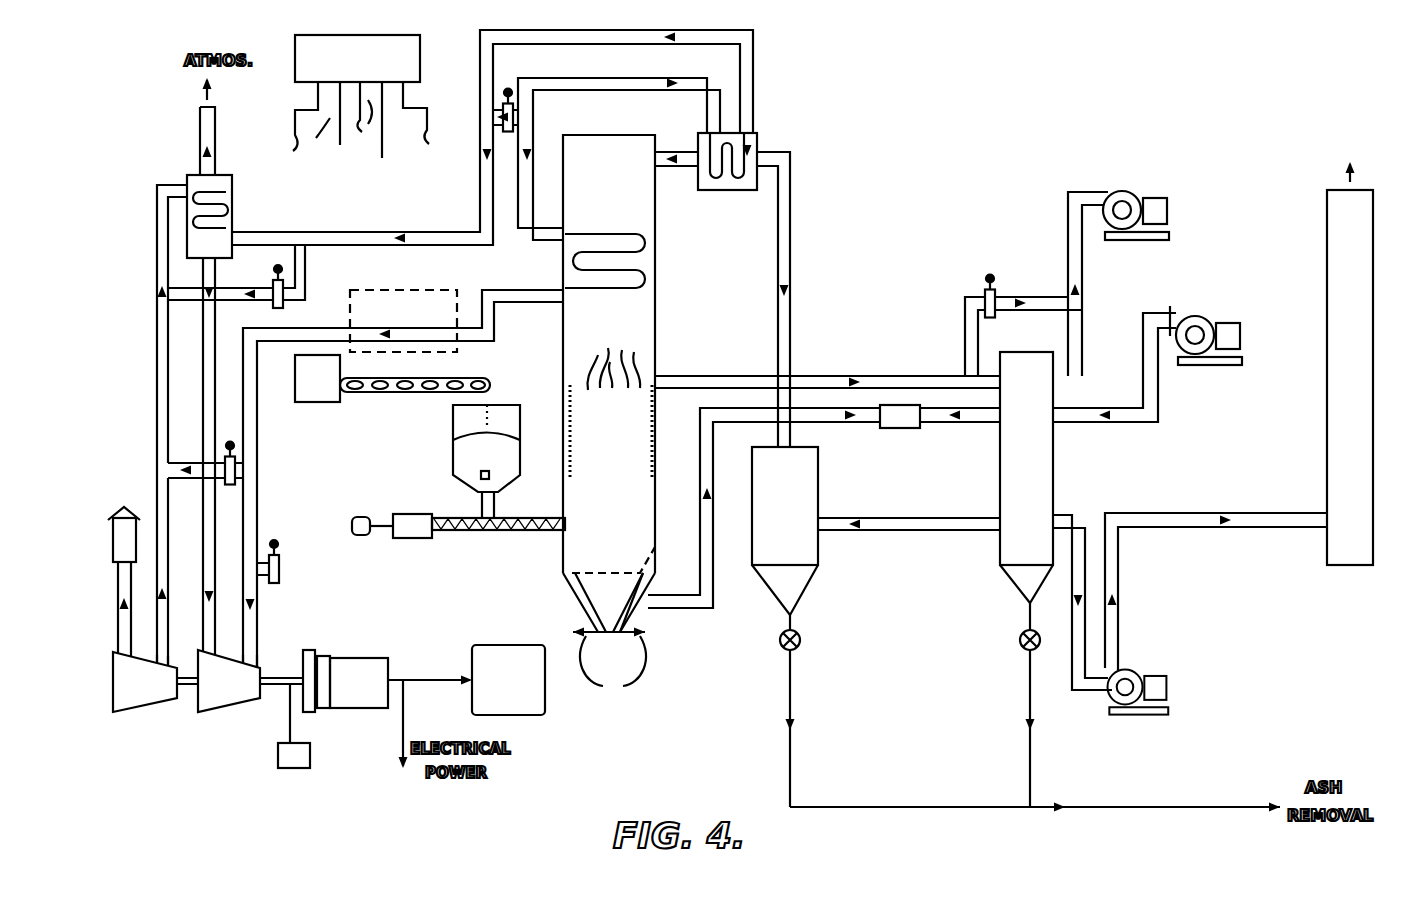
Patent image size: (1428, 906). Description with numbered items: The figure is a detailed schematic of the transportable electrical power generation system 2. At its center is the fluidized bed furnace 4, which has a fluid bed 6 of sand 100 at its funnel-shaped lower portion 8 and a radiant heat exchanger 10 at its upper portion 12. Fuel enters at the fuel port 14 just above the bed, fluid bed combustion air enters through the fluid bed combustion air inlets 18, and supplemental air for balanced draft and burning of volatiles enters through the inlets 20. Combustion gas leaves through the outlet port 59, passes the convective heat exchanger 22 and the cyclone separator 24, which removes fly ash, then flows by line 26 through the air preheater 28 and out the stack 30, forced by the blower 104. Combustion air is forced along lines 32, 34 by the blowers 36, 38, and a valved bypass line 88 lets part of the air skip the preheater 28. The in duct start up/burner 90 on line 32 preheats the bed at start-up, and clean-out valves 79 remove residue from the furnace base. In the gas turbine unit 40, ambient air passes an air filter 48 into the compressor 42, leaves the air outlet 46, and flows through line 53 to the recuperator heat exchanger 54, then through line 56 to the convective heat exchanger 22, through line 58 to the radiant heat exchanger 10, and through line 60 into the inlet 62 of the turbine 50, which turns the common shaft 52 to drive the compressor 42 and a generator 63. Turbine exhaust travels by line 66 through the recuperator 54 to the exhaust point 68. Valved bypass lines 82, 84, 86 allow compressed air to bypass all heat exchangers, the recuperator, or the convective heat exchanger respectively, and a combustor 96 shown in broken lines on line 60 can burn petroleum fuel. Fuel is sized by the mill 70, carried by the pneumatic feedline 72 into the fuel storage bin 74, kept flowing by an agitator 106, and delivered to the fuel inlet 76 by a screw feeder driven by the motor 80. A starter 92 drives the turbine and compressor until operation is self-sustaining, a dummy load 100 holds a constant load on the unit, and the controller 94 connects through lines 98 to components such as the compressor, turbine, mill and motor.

The transportable electrical power generation system 2 is at (962, 90).
The fluidized bed furnace 4 is at (663, 343).
The fluid bed 6 is at (655, 548).
The lower portion 8 is at (656, 522).
The radiant heat exchanger 10 is at (590, 236).
The upper portion 12 is at (657, 258).
The fuel port 14 is at (565, 535).
The fluid bed combustion air inlets 18 is at (646, 608).
The inlets 20 is at (613, 361).
The convective heat exchanger 22 is at (762, 143).
The cyclone separator 24 is at (818, 566).
The line 26 is at (920, 518).
The air preheater 28 is at (1055, 492).
The stack 30 is at (1375, 432).
The line 32 is at (714, 606).
The line 34 is at (852, 376).
The blower 36 is at (1236, 322).
The blower 38 is at (1112, 195).
The gas turbine unit 40 is at (171, 695).
The compressor 42 is at (113, 684).
The air outlet 46 is at (163, 655).
The air filter 48 is at (113, 546).
The turbine 50 is at (215, 706).
The common shaft 52 is at (182, 686).
The line 53 is at (157, 393).
The heat exchanger 54 is at (187, 178).
The line 56 is at (372, 232).
The line 58 is at (600, 90).
The outlet port 59 is at (660, 152).
The line 60 is at (258, 520).
The inlet 62 is at (262, 657).
The generator 63 is at (390, 682).
The line 66 is at (204, 360).
The exhaust point 68 is at (216, 118).
The mill 70 is at (298, 405).
The pneumatic feedline 72 is at (348, 398).
The fuel storage bin 74 is at (453, 438).
The fuel inlet 76 is at (498, 508).
The clean-out valves 79 is at (613, 665).
The motor 80 is at (356, 516).
The valved bypass line 82 is at (201, 466).
The valved bypass line 84 is at (300, 278).
The valved bypass line 86 is at (503, 108).
The valved bypass line 88 is at (1020, 297).
The in duct start up/burner 90 is at (885, 428).
The starter 92 is at (278, 758).
The controller 94 is at (383, 35).
The combustor 96 is at (428, 290).
The lines 98 is at (406, 160).
The sand 100 is at (495, 647).
The blower 104 is at (1135, 670).
The agitator 106 is at (483, 478).